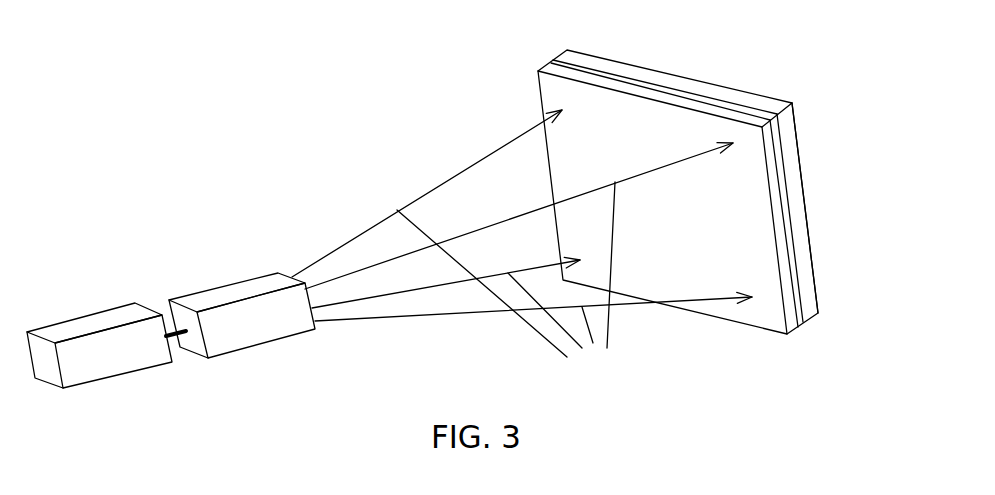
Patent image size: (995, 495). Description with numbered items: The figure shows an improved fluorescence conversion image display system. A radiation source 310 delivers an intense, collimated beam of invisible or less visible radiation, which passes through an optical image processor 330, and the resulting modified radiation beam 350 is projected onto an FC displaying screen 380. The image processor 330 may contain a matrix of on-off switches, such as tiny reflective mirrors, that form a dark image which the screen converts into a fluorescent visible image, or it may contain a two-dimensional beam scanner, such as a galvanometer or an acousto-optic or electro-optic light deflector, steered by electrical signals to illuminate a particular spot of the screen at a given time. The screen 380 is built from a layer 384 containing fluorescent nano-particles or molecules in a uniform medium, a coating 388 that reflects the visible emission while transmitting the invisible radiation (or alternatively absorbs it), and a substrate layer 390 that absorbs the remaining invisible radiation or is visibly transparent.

The radiation source 310 is at (99, 338).
The optical image processor 330 is at (240, 309).
The modified radiation beam 350 is at (506, 283).
The FC displaying screen 380 is at (704, 186).
The layer containing fluorescent nano-particles or molecules 384 is at (700, 103).
The coating 388 is at (780, 148).
The substrate layer 390 is at (793, 192).